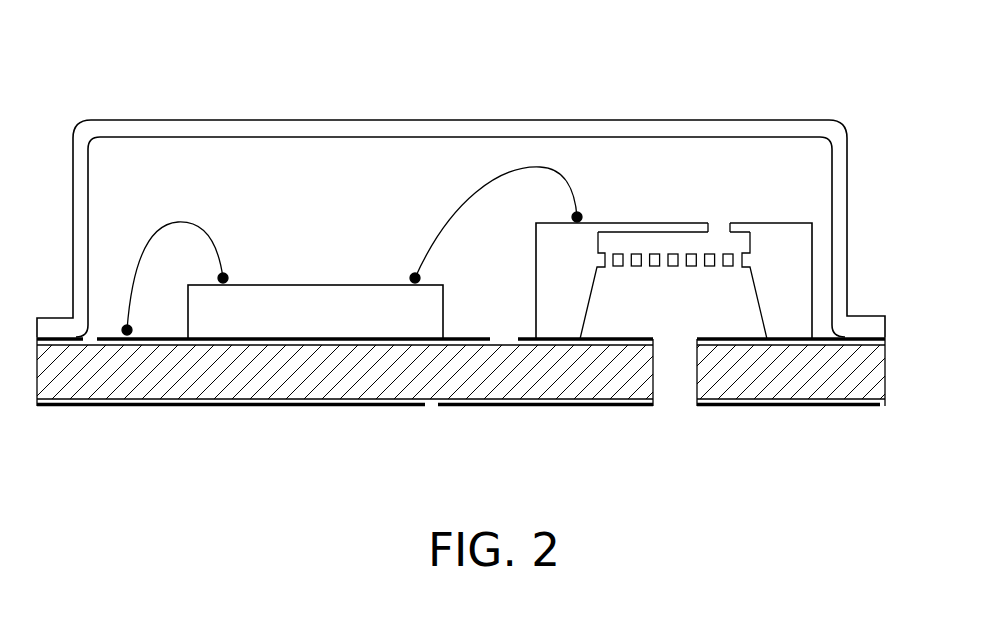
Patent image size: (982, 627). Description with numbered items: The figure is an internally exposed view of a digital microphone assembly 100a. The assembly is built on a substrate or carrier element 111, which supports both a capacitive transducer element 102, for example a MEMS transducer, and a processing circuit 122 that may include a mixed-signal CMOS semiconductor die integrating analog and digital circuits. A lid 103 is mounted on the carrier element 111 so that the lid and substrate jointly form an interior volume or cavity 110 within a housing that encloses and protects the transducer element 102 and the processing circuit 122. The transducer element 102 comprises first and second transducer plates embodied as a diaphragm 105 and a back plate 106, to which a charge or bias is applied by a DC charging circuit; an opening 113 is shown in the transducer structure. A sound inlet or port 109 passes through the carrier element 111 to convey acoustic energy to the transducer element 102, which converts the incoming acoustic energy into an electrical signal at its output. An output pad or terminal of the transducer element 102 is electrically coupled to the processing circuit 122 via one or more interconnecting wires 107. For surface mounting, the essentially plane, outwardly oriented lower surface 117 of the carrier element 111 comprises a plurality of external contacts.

The microphone assembly 100a is at (108, 453).
The lid 103 is at (461, 169).
The back volume / interior cavity 110 is at (169, 177).
The carrier element 111 is at (470, 426).
The sound inlet or port 109 is at (680, 393).
The lower surface 117 is at (535, 406).
The processing circuit 122 is at (297, 283).
The interconnecting wires 107 is at (477, 181).
The diaphragm 105 is at (674, 243).
The capacitive transducer element 102 is at (752, 222).
The opening in back plate 113 is at (717, 222).
The back plate 106 is at (660, 275).